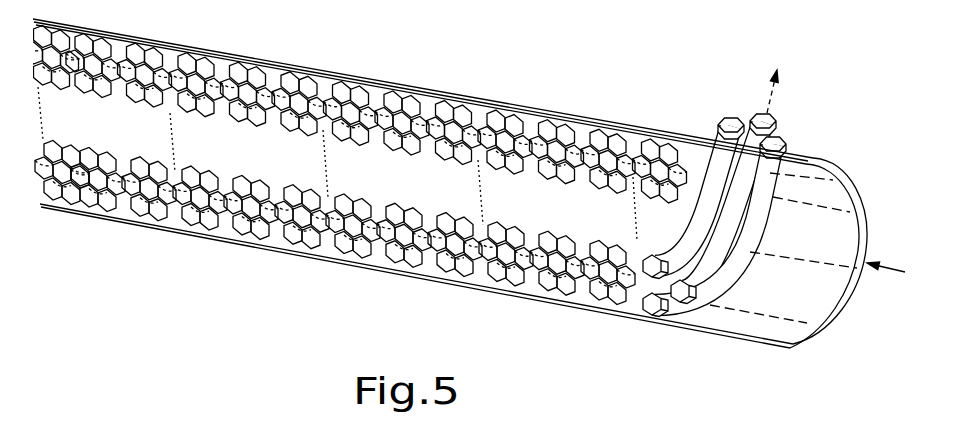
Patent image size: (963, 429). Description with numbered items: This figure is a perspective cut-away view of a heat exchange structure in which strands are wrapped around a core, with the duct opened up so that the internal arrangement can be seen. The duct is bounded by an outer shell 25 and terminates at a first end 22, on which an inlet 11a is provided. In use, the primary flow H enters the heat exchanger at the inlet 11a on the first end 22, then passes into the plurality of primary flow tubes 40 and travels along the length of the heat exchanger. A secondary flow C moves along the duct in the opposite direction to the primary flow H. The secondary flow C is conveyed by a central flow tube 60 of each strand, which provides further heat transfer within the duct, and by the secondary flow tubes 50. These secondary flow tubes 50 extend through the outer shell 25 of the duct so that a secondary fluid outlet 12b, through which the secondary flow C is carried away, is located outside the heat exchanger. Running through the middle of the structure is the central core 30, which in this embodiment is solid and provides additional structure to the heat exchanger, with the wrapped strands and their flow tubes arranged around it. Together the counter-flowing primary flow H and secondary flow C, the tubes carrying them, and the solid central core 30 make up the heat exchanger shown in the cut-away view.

The outer shell 25 is at (316, 66).
The central flow tube 60 is at (540, 135).
The secondary flow tubes 50 is at (594, 140).
The primary flow tubes 40 is at (618, 134).
The central core 30 is at (356, 190).
The secondary fluid outlet 12b is at (778, 131).
The first end 22 is at (808, 247).
The inlet 11a is at (853, 294).
The secondary flow C is at (777, 75).
The primary flow H is at (899, 272).